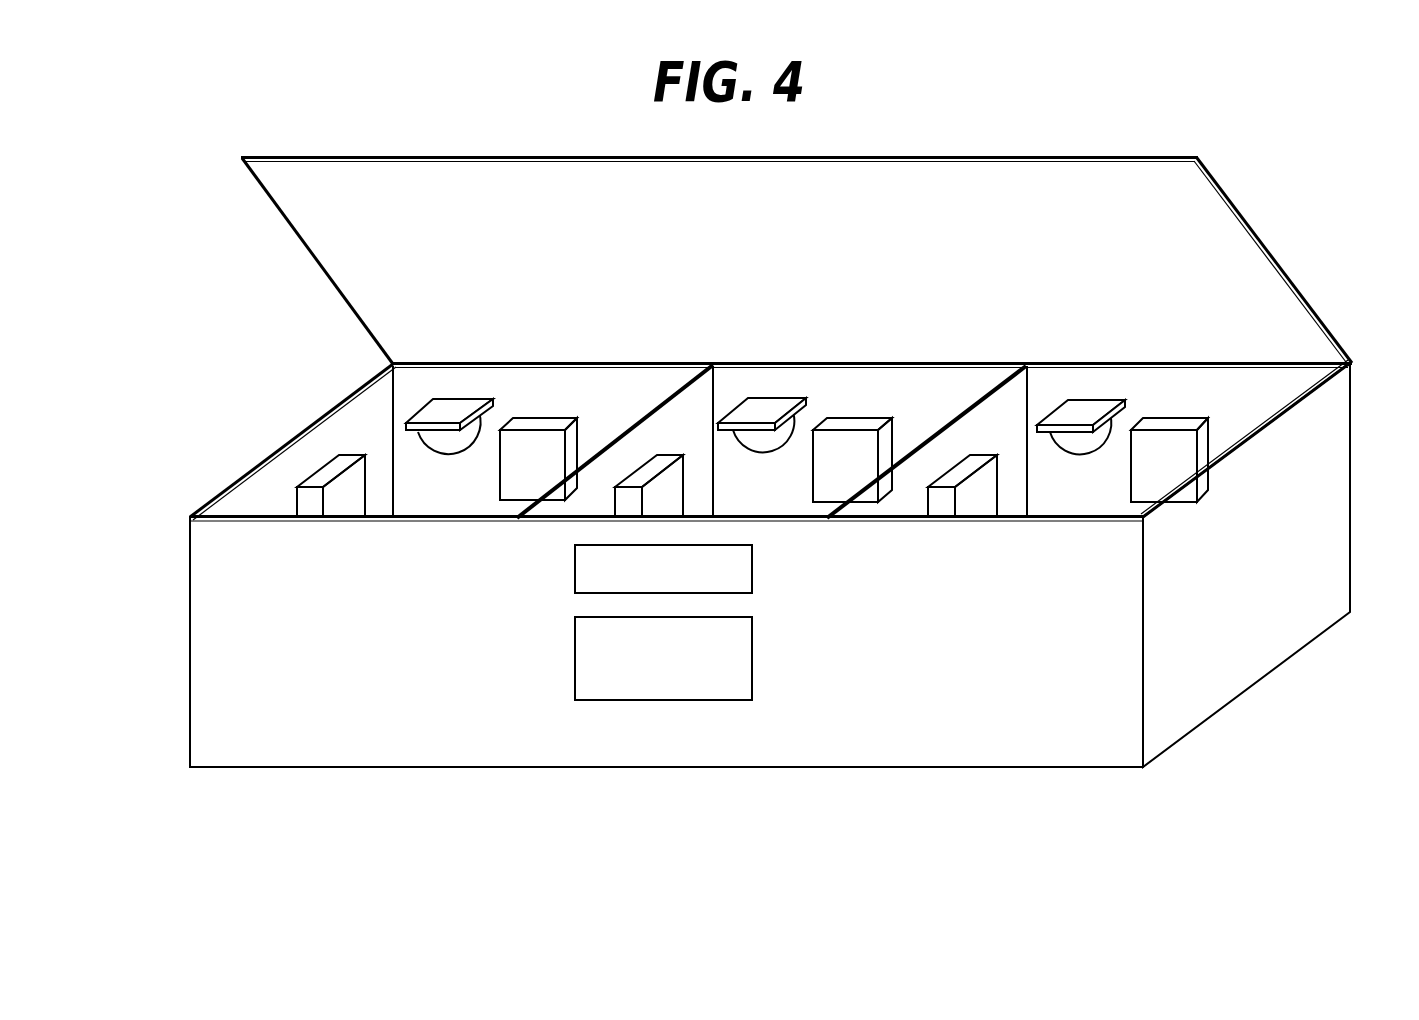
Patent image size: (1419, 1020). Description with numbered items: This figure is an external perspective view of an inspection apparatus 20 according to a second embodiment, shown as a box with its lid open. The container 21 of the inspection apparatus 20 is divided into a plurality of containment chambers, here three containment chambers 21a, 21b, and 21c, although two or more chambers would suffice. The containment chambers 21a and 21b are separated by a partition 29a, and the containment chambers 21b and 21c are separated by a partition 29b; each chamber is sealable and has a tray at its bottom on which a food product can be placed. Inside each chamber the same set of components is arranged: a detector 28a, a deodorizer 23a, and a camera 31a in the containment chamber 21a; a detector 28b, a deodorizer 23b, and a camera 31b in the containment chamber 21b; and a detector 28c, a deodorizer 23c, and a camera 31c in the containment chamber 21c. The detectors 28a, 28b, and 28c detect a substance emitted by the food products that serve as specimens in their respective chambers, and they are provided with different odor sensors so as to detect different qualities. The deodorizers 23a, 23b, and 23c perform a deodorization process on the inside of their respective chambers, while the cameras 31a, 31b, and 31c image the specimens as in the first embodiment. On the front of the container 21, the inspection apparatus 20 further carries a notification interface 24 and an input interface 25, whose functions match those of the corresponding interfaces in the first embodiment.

The inspection apparatus 20 is at (1291, 181).
The container 21 is at (220, 585).
The containment chamber 21a is at (410, 400).
The containment chamber 21b is at (777, 385).
The containment chamber 21c is at (1112, 387).
The deodorizer 23a is at (322, 477).
The deodorizer 23b is at (623, 502).
The deodorizer 23c is at (972, 503).
The notification interface 24 is at (665, 692).
The input interface 25 is at (745, 572).
The detector 28a is at (537, 440).
The detector 28b is at (848, 445).
The detector 28c is at (1168, 473).
The partition 29a is at (707, 398).
The partition 29b is at (862, 505).
The camera 31a is at (450, 442).
The camera 31b is at (767, 442).
The camera 31c is at (1083, 440).